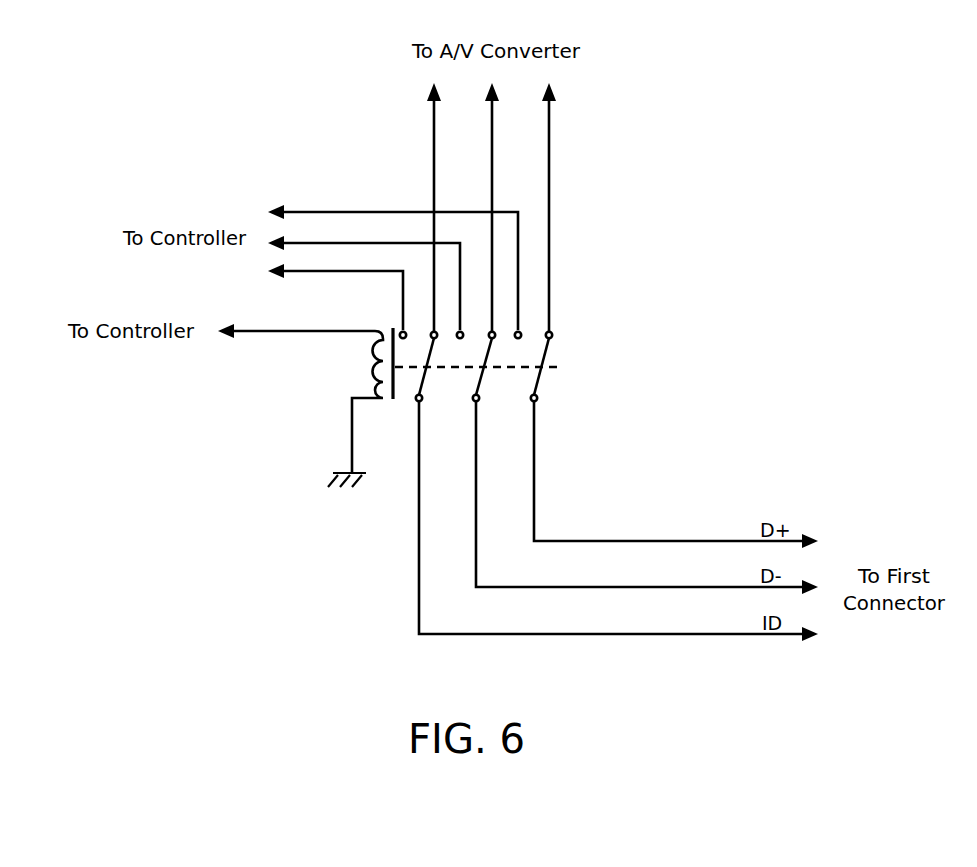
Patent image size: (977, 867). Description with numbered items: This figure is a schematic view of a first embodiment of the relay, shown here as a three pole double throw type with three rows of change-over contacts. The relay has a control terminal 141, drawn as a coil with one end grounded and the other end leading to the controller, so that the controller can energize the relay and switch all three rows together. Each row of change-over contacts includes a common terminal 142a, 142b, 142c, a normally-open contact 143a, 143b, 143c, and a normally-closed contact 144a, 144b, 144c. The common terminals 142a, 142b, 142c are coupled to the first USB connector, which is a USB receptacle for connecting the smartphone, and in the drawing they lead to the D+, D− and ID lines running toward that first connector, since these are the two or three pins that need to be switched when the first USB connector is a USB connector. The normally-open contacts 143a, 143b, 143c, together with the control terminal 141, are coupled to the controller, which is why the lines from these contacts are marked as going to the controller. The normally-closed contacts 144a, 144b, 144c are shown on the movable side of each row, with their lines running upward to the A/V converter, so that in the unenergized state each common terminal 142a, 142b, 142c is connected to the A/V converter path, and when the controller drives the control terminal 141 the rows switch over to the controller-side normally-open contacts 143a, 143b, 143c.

The control terminal 141 is at (277, 332).
The common terminal 142a is at (535, 410).
The common terminal 142b is at (477, 410).
The common terminal 142c is at (420, 410).
The normally-open contact 143a is at (520, 331).
The normally-open contact 143b is at (462, 331).
The normally-open contact 143c is at (405, 331).
The normally-closed contact 144a is at (550, 333).
The normally-closed contact 144b is at (494, 336).
The normally-closed contact 144c is at (437, 336).